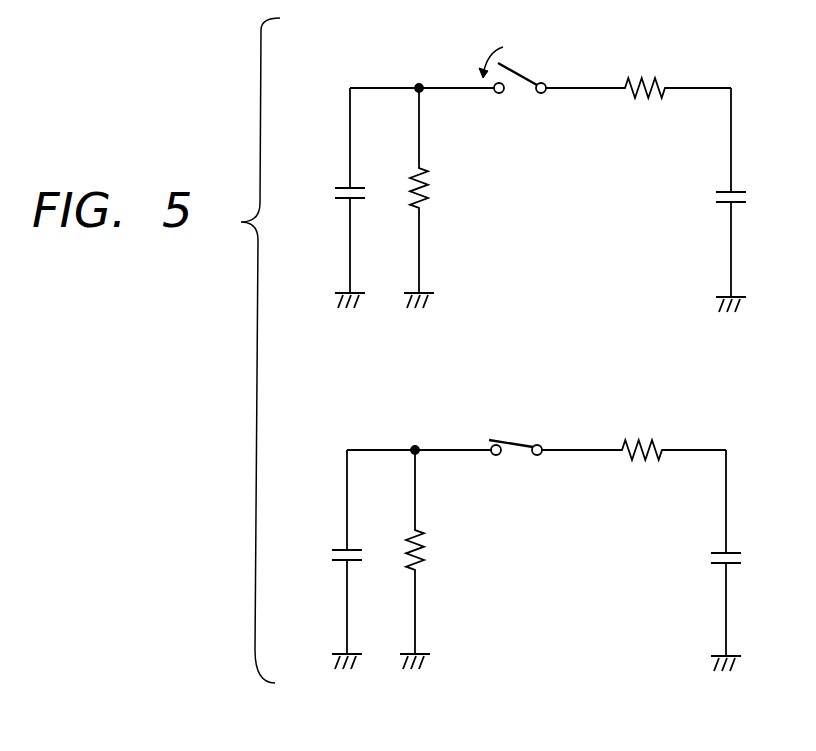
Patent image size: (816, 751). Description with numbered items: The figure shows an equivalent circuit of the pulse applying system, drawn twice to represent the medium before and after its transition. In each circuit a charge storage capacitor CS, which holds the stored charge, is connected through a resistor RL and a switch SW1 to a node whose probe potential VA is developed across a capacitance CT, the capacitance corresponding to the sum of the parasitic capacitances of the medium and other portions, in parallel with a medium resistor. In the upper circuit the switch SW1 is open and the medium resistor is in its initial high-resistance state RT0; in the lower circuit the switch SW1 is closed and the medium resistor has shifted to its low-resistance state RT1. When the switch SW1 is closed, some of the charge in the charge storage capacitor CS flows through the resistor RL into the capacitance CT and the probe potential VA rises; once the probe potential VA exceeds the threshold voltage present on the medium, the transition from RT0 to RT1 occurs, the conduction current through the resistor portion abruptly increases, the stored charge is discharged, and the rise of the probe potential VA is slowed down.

The probe potential VA is at (422, 74).
The capacitance CT is at (332, 378).
The medium resistor (initial high-resistance state) RT0 is at (438, 198).
The medium resistor (low-resistance state) RT1 is at (433, 559).
The switch SW1 is at (512, 266).
The resistor RL is at (636, 255).
The charge storage capacitor CS is at (709, 379).